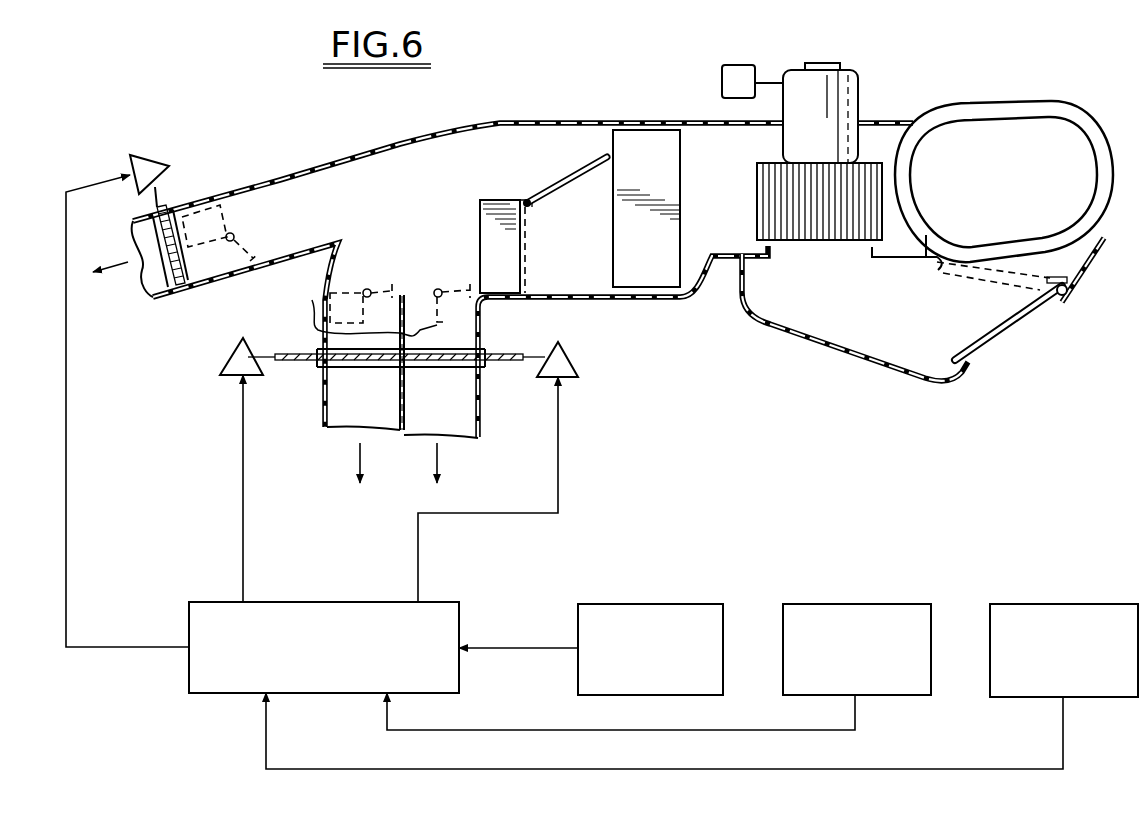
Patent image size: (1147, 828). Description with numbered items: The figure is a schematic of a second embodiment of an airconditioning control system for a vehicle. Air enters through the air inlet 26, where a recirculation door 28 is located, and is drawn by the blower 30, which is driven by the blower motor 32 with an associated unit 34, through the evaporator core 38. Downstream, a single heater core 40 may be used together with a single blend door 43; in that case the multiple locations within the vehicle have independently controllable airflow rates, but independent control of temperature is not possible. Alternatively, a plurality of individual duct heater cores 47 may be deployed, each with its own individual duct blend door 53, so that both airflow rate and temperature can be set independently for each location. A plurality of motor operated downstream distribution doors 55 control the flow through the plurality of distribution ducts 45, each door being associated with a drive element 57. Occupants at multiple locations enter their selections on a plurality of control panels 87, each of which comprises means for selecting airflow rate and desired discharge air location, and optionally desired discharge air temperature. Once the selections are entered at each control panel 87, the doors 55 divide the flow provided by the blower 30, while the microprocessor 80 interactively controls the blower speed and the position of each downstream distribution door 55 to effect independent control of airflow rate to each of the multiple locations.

The air inlet 26 is at (1008, 137).
The recirculation door 28 is at (1042, 313).
The blower 30 is at (845, 242).
The blower motor 32 is at (858, 96).
The motor control 34 is at (741, 63).
The evaporator core 38 is at (682, 176).
The single heater core 40 is at (478, 250).
The single blend door 43 is at (552, 183).
The distribution ducts 45 is at (289, 188).
The individual duct heater cores 47 is at (188, 199).
The individual duct blend door 53 is at (233, 232).
The motor operated downstream distribution doors 55 is at (155, 297).
The sensor 57 is at (161, 163).
The microprocessor 80 is at (322, 598).
The control panel 87 is at (655, 604).